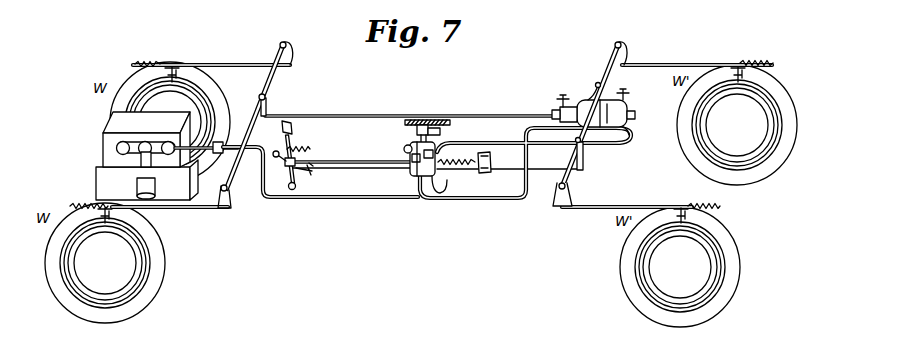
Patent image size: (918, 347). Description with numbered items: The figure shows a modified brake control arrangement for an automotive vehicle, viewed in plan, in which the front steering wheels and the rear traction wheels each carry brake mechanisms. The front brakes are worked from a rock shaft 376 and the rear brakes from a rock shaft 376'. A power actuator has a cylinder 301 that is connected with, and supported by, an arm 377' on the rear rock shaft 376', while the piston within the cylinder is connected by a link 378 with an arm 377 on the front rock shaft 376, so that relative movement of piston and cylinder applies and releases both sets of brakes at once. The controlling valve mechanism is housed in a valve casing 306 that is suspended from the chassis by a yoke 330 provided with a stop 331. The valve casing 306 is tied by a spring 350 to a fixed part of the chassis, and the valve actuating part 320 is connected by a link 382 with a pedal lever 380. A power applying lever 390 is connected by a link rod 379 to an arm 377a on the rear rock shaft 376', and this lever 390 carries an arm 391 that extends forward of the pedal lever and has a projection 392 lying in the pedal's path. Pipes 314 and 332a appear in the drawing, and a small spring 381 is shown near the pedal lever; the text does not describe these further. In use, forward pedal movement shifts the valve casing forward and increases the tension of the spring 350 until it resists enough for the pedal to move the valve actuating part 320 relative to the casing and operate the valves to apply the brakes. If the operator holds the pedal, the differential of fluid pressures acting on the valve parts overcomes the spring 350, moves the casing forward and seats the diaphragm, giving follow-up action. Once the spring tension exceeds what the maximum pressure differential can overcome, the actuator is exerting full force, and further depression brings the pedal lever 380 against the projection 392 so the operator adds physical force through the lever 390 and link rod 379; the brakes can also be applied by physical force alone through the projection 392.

The cylinder 301 is at (608, 102).
The valve casing 306 is at (418, 182).
The pipe 314 is at (480, 200).
The valve actuating part 320 is at (413, 158).
The yoke 330 is at (451, 124).
The stop 331 is at (416, 129).
The pipe 332a is at (622, 144).
The spring 350 is at (458, 167).
The rock shaft 376 is at (255, 125).
The rock shaft 376' is at (590, 123).
The arm 377 is at (283, 104).
The arm 377' is at (581, 85).
The arm 377a is at (585, 166).
The link 378 is at (370, 107).
The link rod 379 is at (381, 171).
The pedal lever 380 is at (276, 155).
The spring 381 is at (308, 139).
The link 382 is at (359, 161).
The power applying lever 390 is at (311, 174).
The arm 391 is at (277, 157).
The projection 392 is at (263, 190).